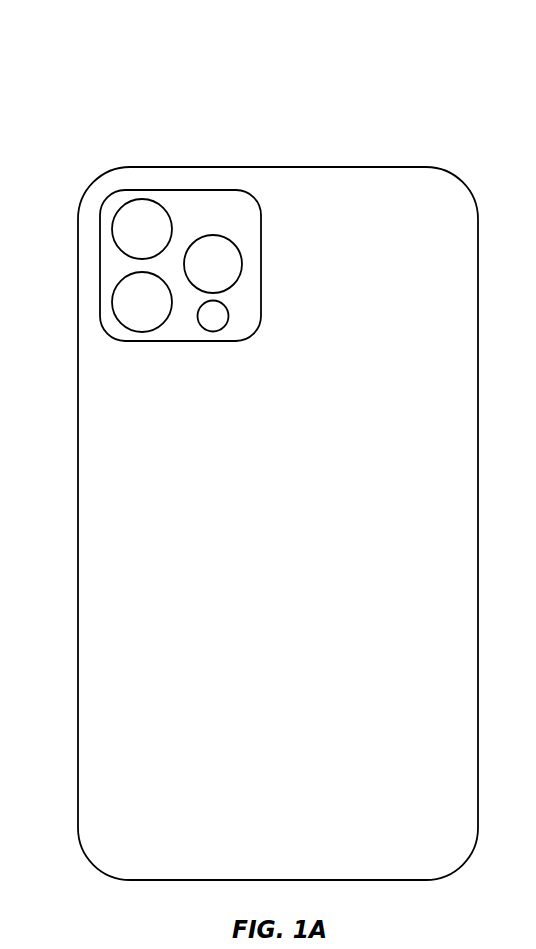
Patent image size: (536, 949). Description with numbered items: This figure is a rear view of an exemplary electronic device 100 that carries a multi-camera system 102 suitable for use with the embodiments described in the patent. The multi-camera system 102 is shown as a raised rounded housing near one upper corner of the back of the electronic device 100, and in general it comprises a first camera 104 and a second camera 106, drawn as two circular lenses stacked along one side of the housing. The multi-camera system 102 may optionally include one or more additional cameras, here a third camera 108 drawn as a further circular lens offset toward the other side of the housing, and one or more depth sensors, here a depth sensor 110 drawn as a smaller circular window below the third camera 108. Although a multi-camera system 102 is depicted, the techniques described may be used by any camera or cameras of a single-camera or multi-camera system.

The electronic device 100 is at (448, 62).
The multi-camera system 102 is at (140, 184).
The first camera 104 is at (113, 216).
The second camera 106 is at (113, 288).
The third camera 108 is at (200, 236).
The depth sensor 110 is at (198, 312).